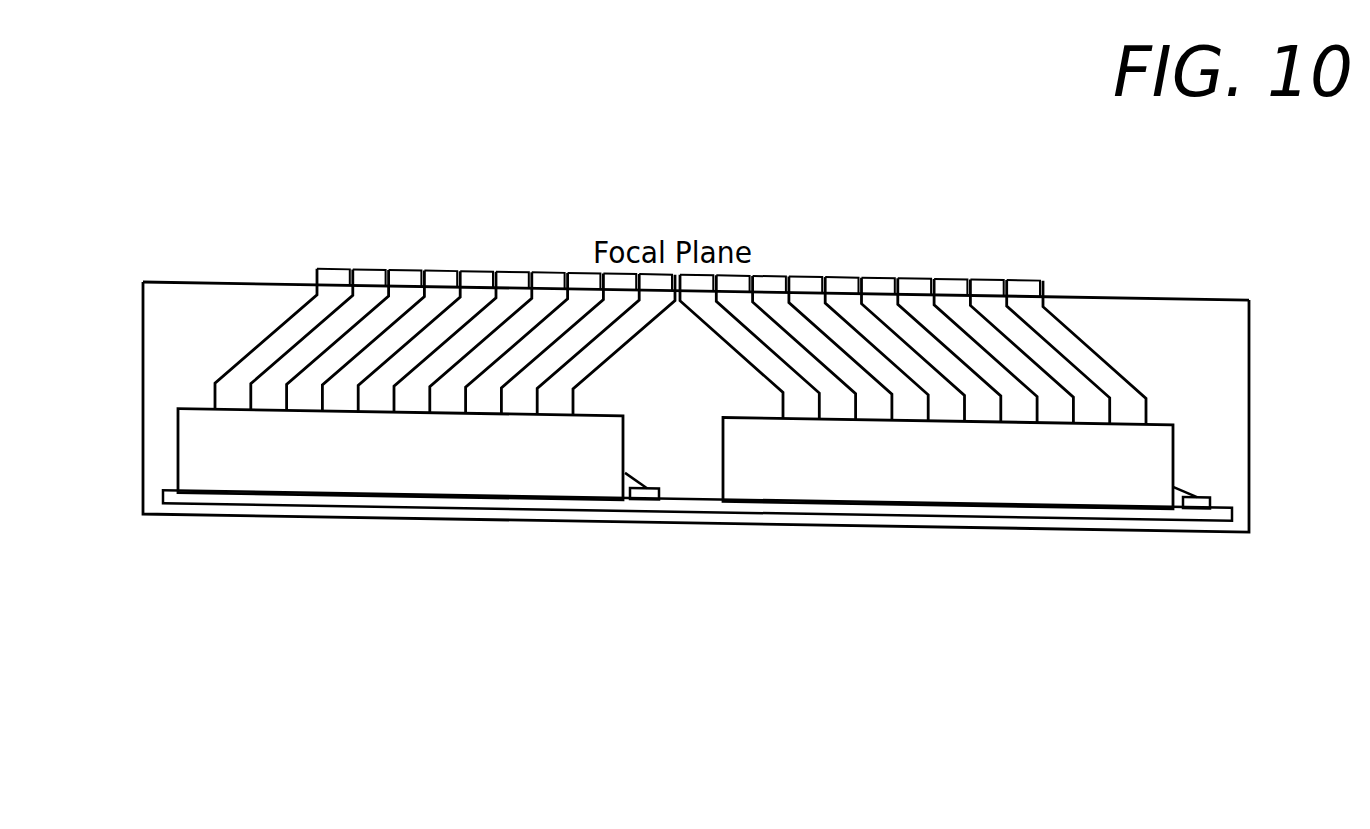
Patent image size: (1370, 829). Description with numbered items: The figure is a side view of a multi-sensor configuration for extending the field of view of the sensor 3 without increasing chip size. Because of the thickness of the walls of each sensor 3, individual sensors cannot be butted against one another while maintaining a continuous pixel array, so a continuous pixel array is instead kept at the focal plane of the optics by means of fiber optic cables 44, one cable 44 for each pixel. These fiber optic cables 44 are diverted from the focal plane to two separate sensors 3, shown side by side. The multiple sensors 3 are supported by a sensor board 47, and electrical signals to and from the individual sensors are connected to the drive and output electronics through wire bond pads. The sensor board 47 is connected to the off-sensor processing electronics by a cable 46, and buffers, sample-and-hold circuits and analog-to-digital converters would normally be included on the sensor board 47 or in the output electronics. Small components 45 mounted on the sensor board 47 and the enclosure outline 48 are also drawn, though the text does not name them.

The sensor 3 is at (430, 473).
The fiber optic cable 44 is at (856, 256).
The chip capacitor 45 is at (1160, 532).
The cable 46 is at (1304, 515).
The sensor board 47 is at (251, 514).
The package lid 48 is at (1119, 284).